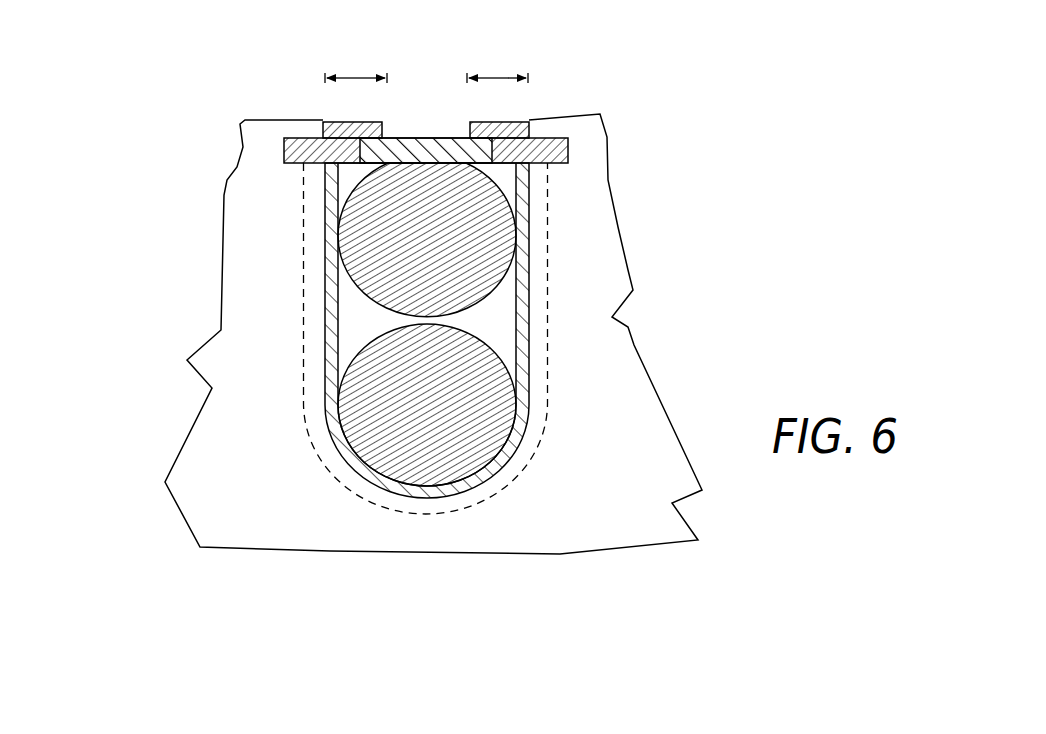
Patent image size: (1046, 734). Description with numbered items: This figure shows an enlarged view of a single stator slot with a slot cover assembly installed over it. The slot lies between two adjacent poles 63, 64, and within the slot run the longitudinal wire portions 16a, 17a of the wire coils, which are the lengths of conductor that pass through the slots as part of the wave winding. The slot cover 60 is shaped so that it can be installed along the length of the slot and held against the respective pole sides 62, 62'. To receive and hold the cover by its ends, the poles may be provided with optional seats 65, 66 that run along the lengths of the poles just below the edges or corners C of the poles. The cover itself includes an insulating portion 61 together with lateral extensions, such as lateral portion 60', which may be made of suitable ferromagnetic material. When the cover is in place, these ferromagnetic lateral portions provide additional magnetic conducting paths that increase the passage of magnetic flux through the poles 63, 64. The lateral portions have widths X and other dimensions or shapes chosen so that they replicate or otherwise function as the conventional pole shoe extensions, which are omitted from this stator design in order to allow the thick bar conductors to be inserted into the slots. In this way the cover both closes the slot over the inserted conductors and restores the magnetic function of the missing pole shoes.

The slot cover 60 is at (483, 90).
The lateral portion 60' is at (295, 103).
The insulating portion 61 is at (400, 136).
The pole side 62 is at (198, 154).
The pole side 62' is at (610, 186).
The pole 63 is at (250, 240).
The pole 64 is at (605, 283).
The seat 65 is at (318, 195).
The seat 66 is at (568, 137).
The longitudinal wire portion 16a is at (497, 231).
The longitudinal wire portion 17a is at (397, 441).
The width X is at (357, 78).
The corner C is at (642, 143).